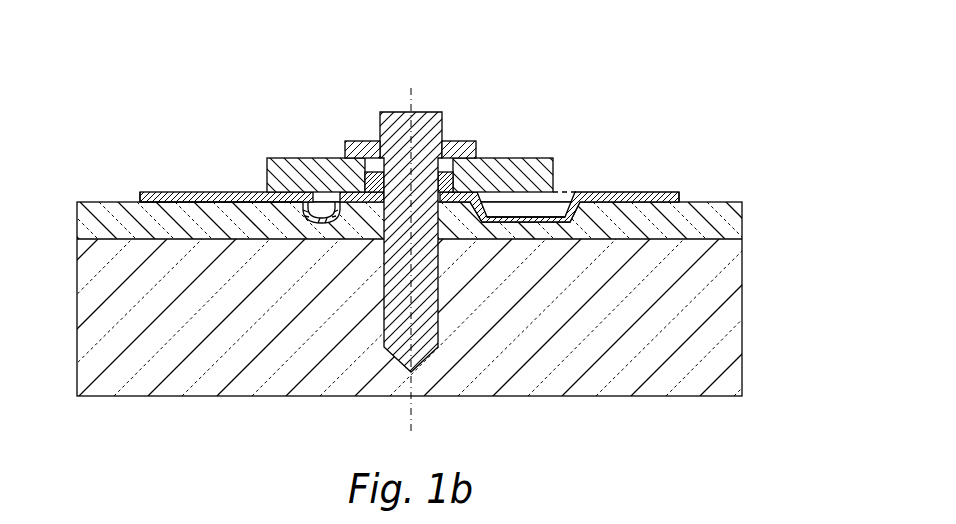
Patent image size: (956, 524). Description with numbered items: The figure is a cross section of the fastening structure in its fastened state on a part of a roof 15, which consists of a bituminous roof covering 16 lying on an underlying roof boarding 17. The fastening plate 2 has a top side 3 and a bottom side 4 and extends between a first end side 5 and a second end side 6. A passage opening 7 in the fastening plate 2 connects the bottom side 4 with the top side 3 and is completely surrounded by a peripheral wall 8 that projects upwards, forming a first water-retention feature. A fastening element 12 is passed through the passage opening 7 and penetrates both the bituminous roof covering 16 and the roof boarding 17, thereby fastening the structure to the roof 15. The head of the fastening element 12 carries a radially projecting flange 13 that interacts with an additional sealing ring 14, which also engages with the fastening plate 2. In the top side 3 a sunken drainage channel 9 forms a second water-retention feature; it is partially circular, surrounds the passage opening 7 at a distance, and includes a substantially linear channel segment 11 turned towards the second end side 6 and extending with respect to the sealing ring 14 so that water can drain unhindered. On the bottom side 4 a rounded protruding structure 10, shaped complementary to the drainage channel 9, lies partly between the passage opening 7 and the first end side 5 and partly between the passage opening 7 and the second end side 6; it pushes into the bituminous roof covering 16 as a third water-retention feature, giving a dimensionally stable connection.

The fastening plate 2 is at (646, 182).
The top side 3 is at (183, 184).
The bottom side 4 is at (157, 201).
The first end side 5 is at (140, 198).
The second end side 6 is at (680, 197).
The passage opening 7 is at (457, 139).
The peripheral wall 8 is at (366, 180).
The drainage channel 9 is at (306, 205).
The protruding structure 10 is at (322, 214).
The linear channel segment 11 is at (566, 219).
The fastening element 12 is at (427, 95).
The radially projecting flange 13 is at (348, 140).
The sealing ring 14 is at (268, 173).
The roof 15 is at (765, 166).
The bituminous roof covering 16 is at (726, 218).
The roof boarding 17 is at (726, 313).